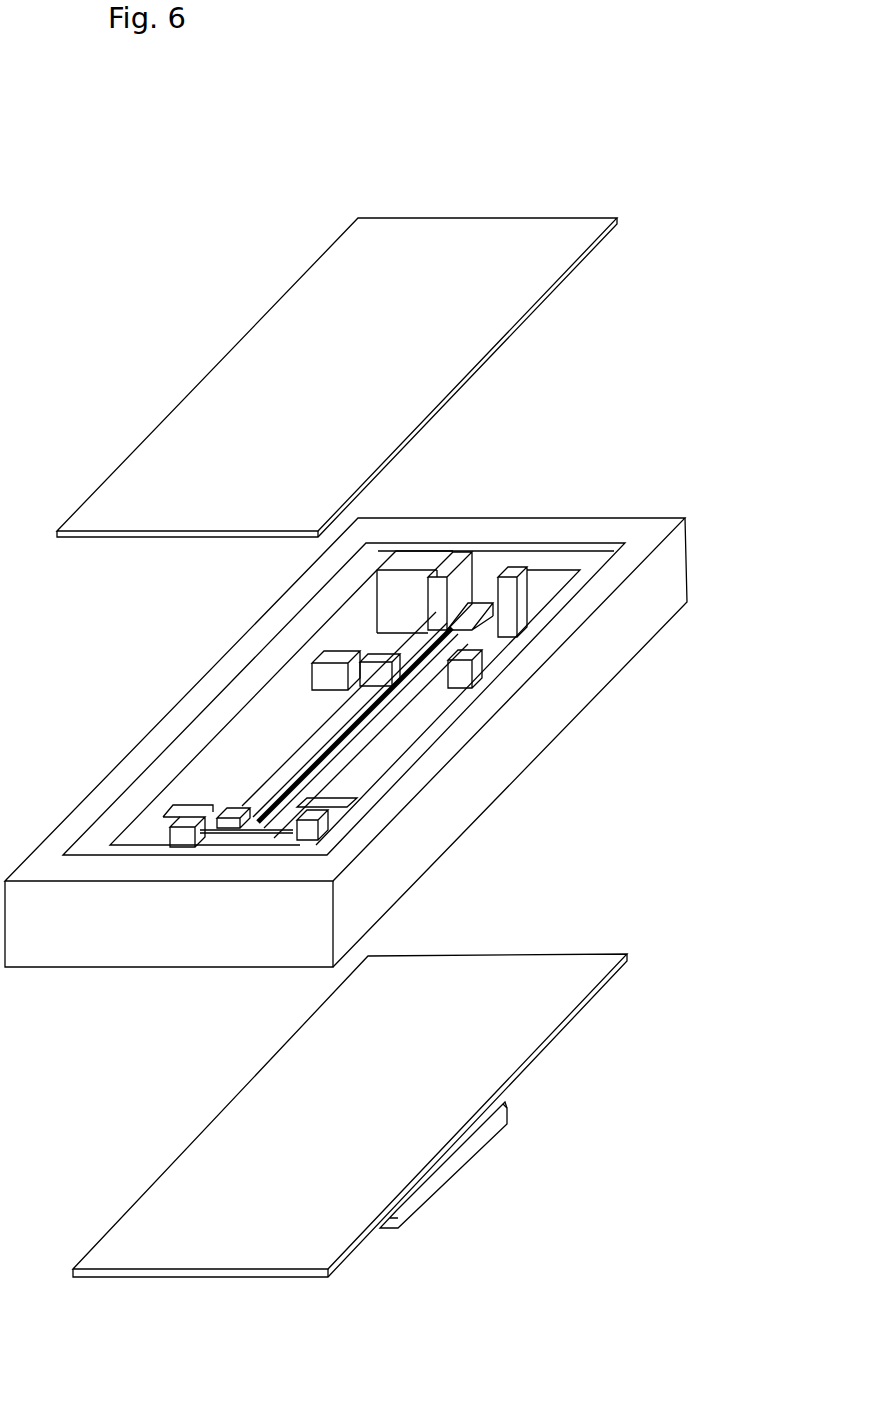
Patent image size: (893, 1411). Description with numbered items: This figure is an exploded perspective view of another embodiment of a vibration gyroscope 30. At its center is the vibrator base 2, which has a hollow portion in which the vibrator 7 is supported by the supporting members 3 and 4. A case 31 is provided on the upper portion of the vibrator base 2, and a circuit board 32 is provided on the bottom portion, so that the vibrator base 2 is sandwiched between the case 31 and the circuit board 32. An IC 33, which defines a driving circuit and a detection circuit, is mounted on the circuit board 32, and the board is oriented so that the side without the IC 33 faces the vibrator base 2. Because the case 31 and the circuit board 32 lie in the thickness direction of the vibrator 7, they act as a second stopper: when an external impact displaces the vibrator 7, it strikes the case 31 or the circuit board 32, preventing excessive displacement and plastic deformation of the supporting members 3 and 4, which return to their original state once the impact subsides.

The vibration gyroscope 30 is at (139, 284).
The case 31 is at (253, 350).
The vibrator base 2 is at (255, 645).
The supporting member 3 is at (443, 637).
The supporting member 4 is at (253, 823).
The vibrator 7 is at (380, 727).
The circuit board 32 is at (267, 1120).
The IC 33 is at (450, 1170).